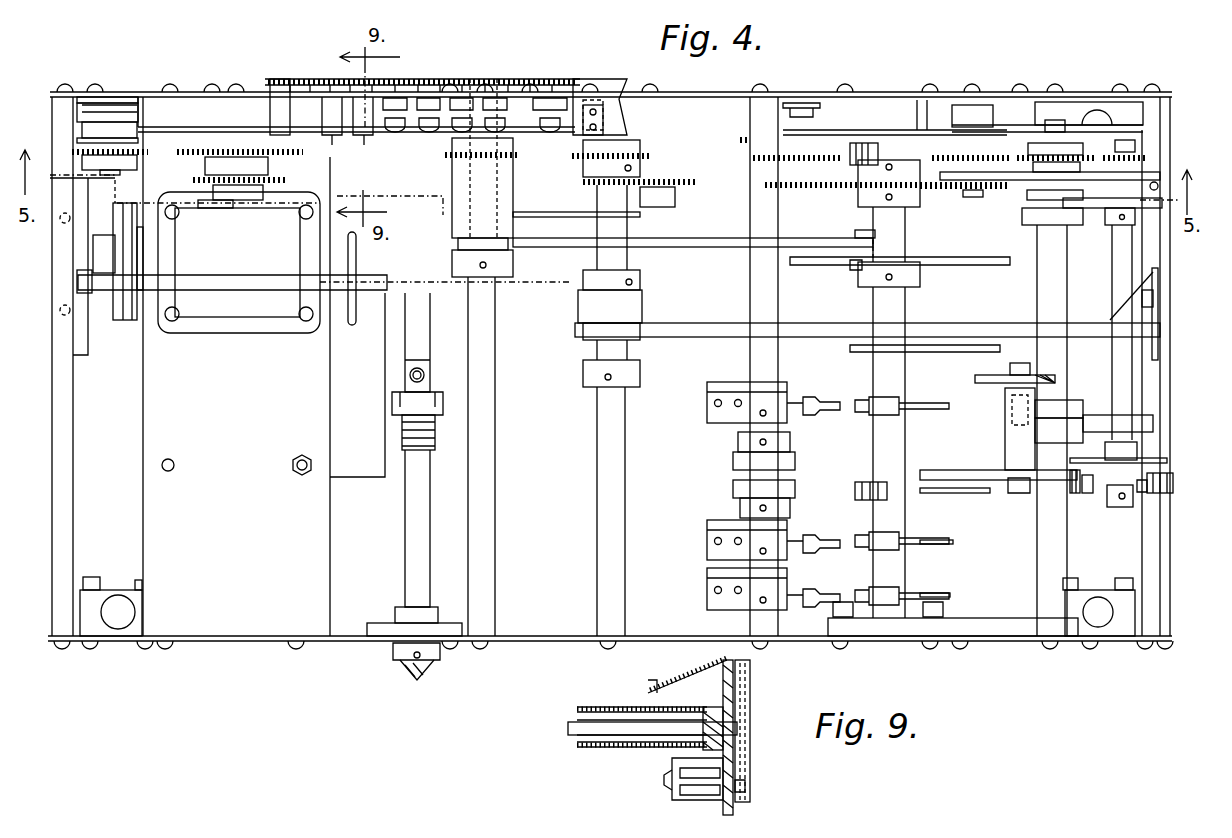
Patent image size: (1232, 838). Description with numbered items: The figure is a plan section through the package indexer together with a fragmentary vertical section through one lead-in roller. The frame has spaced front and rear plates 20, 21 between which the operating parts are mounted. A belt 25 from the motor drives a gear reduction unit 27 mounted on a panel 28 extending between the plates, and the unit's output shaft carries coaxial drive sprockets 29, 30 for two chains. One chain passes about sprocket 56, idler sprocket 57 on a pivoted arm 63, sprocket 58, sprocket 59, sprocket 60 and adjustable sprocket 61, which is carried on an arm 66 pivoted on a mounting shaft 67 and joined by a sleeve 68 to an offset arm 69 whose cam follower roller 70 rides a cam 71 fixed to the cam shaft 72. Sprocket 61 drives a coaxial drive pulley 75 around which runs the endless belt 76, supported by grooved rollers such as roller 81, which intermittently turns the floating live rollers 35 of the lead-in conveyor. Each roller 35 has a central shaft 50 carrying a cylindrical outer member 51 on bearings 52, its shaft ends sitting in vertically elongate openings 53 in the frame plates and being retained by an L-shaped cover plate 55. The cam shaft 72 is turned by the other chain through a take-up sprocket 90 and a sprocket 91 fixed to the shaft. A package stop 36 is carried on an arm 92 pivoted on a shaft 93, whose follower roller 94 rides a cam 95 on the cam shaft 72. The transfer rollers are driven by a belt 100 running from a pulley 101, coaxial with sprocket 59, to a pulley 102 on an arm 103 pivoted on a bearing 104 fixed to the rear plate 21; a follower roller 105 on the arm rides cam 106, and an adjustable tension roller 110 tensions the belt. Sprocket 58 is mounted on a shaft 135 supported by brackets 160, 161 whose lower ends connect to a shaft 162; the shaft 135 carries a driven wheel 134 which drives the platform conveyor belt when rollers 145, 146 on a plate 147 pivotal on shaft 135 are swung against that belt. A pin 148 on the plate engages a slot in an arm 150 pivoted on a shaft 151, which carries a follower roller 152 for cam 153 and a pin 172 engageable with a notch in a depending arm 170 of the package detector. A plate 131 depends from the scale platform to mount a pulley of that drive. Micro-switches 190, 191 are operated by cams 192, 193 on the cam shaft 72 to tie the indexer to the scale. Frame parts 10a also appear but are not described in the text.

In FIG. 4, the endless belt 76 is at (78, 103).
In FIG. 4, the drive pulley 75 is at (140, 123).
In FIG. 4, the adjustable sprocket 61 is at (75, 150).
In FIG. 4, the arm 66 is at (236, 131).
In FIG. 4, the pivoted arm 63 is at (723, 120).
In FIG. 4, the live rollers 35 is at (365, 145).
In FIG. 9, the live rollers 35 is at (588, 707).
In FIG. 4, the cover plate 55 is at (590, 96).
In FIG. 9, the cover plate 55 is at (646, 684).
In FIG. 4, the supporting roller 81 is at (536, 125).
In FIG. 4, the drive sprocket 30 is at (298, 154).
In FIG. 4, the gear reduction unit 27 is at (228, 267).
In FIG. 4, the drive sprocket 29 is at (288, 190).
In FIG. 4, the belt 25 is at (125, 202).
In FIG. 4, the panel 28 is at (258, 440).
In FIG. 4, the front plate 20 is at (540, 643).
In FIG. 4, the sprocket 56 is at (522, 155).
In FIG. 4, the sleeve 68 is at (513, 268).
In FIG. 4, the mounting shaft 67 is at (495, 445).
In FIG. 4, the offset arm 69 is at (700, 247).
In FIG. 4, the sprocket 60 is at (655, 155).
In FIG. 4, the take-up sprocket 90 is at (691, 178).
In FIG. 4, the shaft 93 is at (623, 470).
In FIG. 4, the arm 92 is at (690, 335).
In FIG. 4, the cam 95 is at (1000, 346).
In FIG. 4, the idler sprocket 57 is at (780, 168).
In FIG. 4, the shaft 151 is at (783, 370).
In FIG. 4, the micro-switch 190 is at (707, 545).
In FIG. 4, the micro-switch 191 is at (707, 598).
In FIG. 4, the cam shaft 72 is at (905, 300).
In FIG. 4, the cam follower roller 70 is at (852, 270).
In FIG. 4, the cam 71 is at (1002, 265).
In FIG. 4, the cam follower roller 152 is at (875, 497).
In FIG. 4, the cam follower roller 94 is at (945, 352).
In FIG. 4, the rear plate 21 is at (800, 100).
In FIG. 9, the rear plate 21 is at (745, 808).
In FIG. 4, the cam follower roller 105 is at (878, 150).
In FIG. 4, the cam 106 is at (918, 125).
In FIG. 4, the pivot bearing 104 is at (960, 110).
In FIG. 4, the arm 103 is at (1030, 128).
In FIG. 4, the sprocket 91 is at (822, 188).
In FIG. 4, the pulley 101 is at (950, 190).
In FIG. 4, the sprocket 59 is at (1020, 150).
In FIG. 4, the sprocket 58 is at (1125, 160).
In FIG. 4, the belt 100 is at (1160, 176).
In FIG. 4, the pulley 102 is at (1160, 188).
In FIG. 4, the adjustable tension roller 110 is at (1030, 195).
In FIG. 4, the bracket 160 is at (1097, 206).
In FIG. 4, the rotatable shaft 135 is at (1120, 270).
In FIG. 4, the shaft 162 is at (1068, 318).
In FIG. 4, the package stop 36 is at (1163, 350).
In FIG. 4, the depending arm 170 is at (1055, 376).
In FIG. 4, the pin 172 is at (1010, 392).
In FIG. 4, the bracket 161 is at (1088, 410).
In FIG. 4, the arm 150 is at (995, 472).
In FIG. 4, the cam 153 is at (975, 493).
In FIG. 4, the plate 147 is at (1150, 455).
In FIG. 4, the roller 146 is at (1175, 480).
In FIG. 4, the pin 148 is at (1075, 487).
In FIG. 4, the roller 145 is at (1085, 492).
In FIG. 4, the driven wheel 134 is at (1120, 500).
In FIG. 4, the plate 131 is at (1165, 488).
In FIG. 4, the cam 192 is at (952, 543).
In FIG. 4, the cam 193 is at (952, 597).
In FIG. 4, the support 10a is at (135, 612).
In FIG. 9, the cylindrical outer member 51 is at (643, 747).
In FIG. 9, the central shaft 50 is at (605, 730).
In FIG. 9, the bearing 52 is at (698, 702).
In FIG. 9, the openings 53 is at (735, 715).